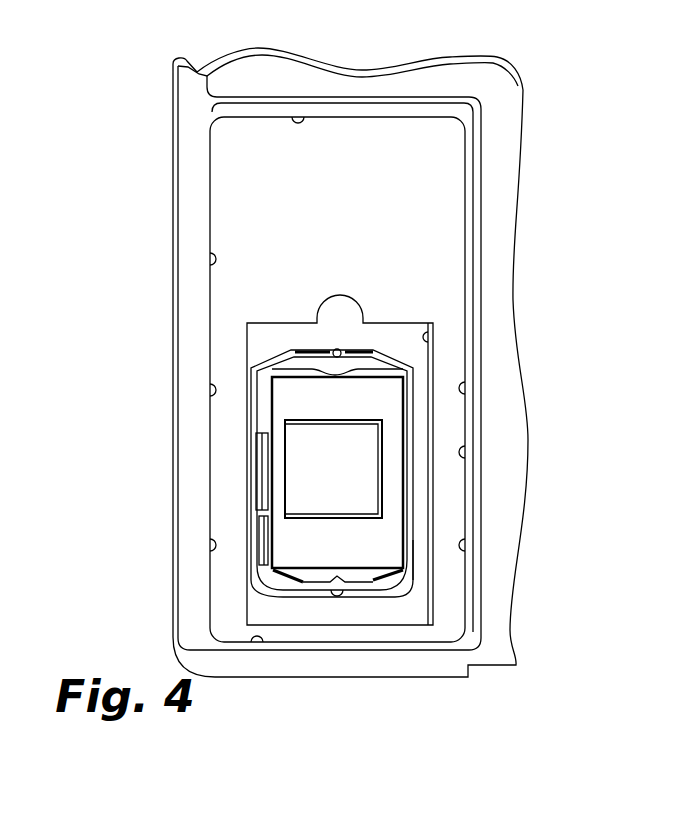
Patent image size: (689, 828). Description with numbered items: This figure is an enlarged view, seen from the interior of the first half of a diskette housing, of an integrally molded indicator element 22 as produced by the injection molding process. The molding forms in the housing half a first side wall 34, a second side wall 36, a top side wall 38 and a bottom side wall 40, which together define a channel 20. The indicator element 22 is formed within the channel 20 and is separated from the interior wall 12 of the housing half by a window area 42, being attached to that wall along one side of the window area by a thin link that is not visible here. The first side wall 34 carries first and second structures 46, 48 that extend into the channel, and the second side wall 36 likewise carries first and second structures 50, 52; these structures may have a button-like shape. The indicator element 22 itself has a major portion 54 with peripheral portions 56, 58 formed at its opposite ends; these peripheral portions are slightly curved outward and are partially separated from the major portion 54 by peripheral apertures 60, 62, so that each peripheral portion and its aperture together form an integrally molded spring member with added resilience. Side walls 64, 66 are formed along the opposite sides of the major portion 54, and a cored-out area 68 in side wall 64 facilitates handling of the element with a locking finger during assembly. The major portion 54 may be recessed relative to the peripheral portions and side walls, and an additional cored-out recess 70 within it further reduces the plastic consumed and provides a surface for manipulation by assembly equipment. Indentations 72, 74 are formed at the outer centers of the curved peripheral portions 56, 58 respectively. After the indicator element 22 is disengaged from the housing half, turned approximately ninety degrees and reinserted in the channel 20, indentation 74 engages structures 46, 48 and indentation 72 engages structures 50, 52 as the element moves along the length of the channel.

The interior wall 12 is at (395, 128).
The channel 20 is at (225, 613).
The indicator element 22 is at (287, 343).
The first side wall 34 is at (214, 258).
The second side wall 36 is at (468, 448).
The top side wall 38 is at (298, 118).
The bottom side wall 40 is at (257, 646).
The window area 42 is at (433, 327).
The first structure 46 is at (212, 392).
The second structure 48 is at (198, 547).
The first structure 50 is at (470, 390).
The second structure 52 is at (470, 545).
The major portion 54 is at (335, 555).
The peripheral portion 56 is at (387, 351).
The peripheral portion 58 is at (317, 592).
The peripheral aperture 60 is at (313, 372).
The peripheral aperture 62 is at (374, 574).
The side wall 64 is at (264, 553).
The side wall 66 is at (417, 563).
The cored-out area 68 is at (262, 465).
The cored-out recess 70 is at (342, 480).
The indentation 72 is at (340, 350).
The indentation 74 is at (339, 595).